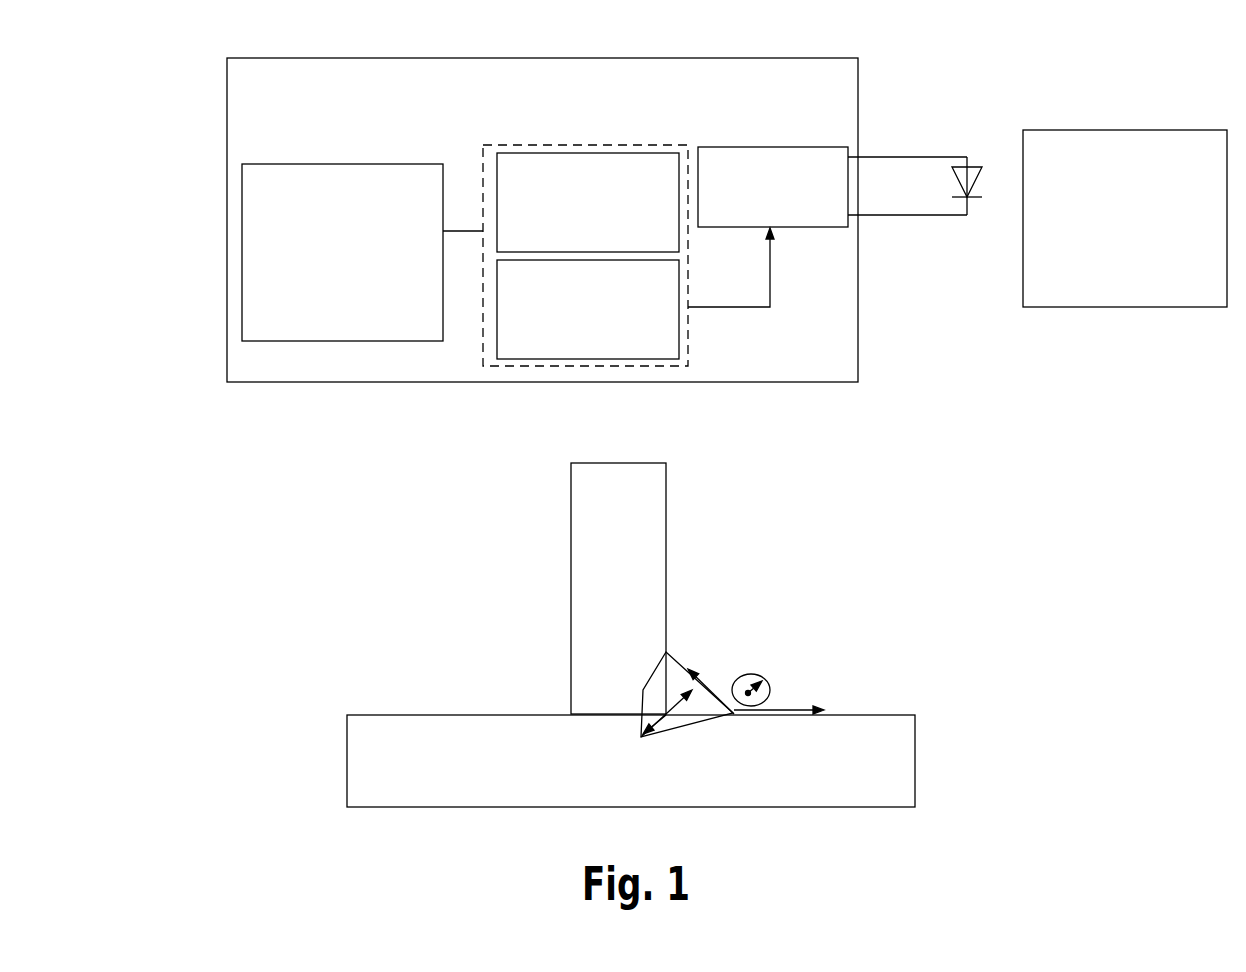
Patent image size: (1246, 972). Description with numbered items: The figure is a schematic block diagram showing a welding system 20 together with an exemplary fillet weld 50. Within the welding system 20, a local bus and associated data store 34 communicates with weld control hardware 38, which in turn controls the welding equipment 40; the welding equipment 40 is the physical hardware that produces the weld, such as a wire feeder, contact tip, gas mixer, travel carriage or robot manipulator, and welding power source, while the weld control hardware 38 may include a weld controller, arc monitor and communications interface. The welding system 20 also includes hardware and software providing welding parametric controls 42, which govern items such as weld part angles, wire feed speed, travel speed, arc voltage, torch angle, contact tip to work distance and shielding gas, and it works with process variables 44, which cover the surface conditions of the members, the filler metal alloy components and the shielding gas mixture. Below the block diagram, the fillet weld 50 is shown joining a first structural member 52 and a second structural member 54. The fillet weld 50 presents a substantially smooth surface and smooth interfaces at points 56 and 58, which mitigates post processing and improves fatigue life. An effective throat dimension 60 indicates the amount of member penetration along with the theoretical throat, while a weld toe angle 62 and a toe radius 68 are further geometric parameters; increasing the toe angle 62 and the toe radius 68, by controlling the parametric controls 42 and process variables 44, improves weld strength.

The welding system 20 is at (858, 103).
The local bus and associated data store 34 is at (670, 263).
The weld control hardware 38 is at (660, 163).
The welding equipment 40 is at (753, 146).
The welding parametric controls 42 is at (323, 164).
The process variables 44 is at (1107, 130).
The fillet weld 50 is at (654, 670).
The structural member 52 is at (666, 511).
The structural member 54 is at (915, 728).
The smooth interface point 56 is at (677, 644).
The smooth interface point 58 is at (745, 724).
The effective throat dimension 60 is at (664, 717).
The weld toe angle 62 is at (783, 709).
The toe radius 68 is at (762, 677).